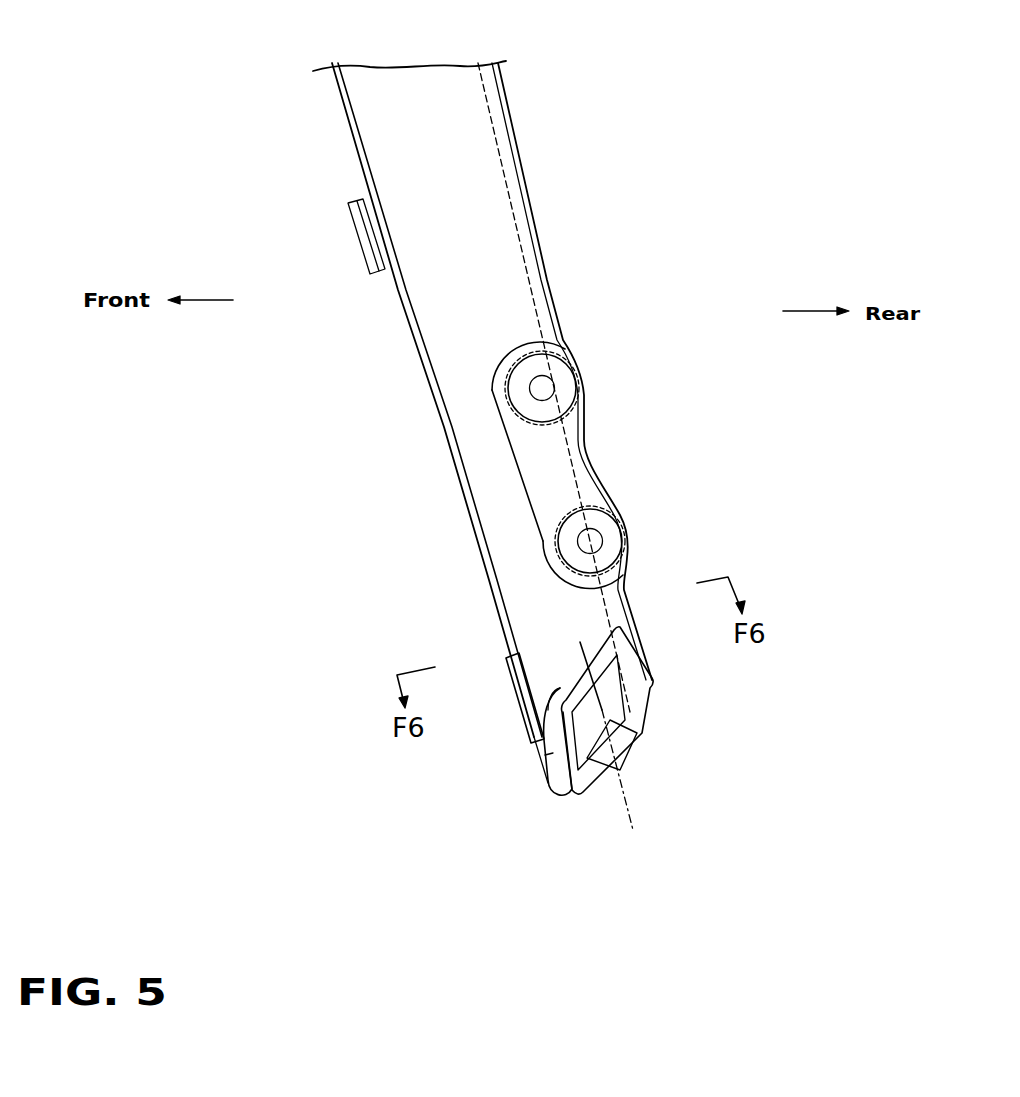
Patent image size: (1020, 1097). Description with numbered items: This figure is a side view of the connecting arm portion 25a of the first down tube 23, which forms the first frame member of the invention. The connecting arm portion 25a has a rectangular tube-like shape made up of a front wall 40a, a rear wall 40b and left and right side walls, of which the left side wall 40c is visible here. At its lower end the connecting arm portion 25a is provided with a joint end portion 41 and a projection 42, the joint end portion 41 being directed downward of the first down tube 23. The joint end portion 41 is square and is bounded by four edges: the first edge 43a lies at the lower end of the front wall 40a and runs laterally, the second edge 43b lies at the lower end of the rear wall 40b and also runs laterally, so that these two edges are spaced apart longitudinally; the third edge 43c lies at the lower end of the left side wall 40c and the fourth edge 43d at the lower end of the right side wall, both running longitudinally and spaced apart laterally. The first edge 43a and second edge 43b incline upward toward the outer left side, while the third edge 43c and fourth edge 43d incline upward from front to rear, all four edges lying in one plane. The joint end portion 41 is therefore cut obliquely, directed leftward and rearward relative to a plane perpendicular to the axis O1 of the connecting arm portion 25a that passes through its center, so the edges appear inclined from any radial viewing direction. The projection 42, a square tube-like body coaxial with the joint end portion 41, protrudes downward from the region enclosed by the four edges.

The first down tube 23 is at (400, 88).
The connecting arm portion 25a is at (465, 428).
The front wall 40a is at (476, 522).
The rear wall 40b is at (585, 460).
The left side wall 40c is at (508, 583).
The joint end portion 41 is at (552, 790).
The projection 42 is at (592, 800).
The first edge 43a is at (553, 755).
The second edge 43b is at (637, 667).
The third edge 43c is at (560, 688).
The fourth edge 43d is at (643, 736).
The axis O1 is at (637, 813).